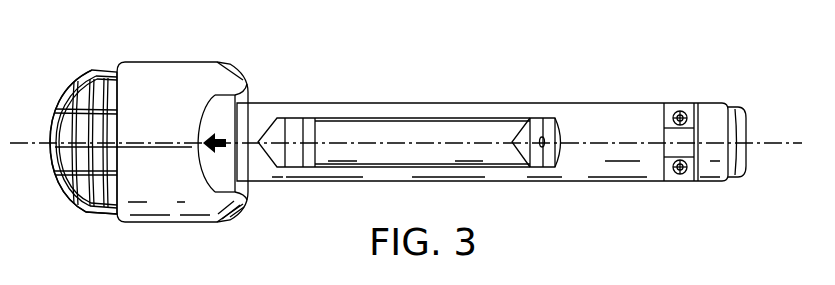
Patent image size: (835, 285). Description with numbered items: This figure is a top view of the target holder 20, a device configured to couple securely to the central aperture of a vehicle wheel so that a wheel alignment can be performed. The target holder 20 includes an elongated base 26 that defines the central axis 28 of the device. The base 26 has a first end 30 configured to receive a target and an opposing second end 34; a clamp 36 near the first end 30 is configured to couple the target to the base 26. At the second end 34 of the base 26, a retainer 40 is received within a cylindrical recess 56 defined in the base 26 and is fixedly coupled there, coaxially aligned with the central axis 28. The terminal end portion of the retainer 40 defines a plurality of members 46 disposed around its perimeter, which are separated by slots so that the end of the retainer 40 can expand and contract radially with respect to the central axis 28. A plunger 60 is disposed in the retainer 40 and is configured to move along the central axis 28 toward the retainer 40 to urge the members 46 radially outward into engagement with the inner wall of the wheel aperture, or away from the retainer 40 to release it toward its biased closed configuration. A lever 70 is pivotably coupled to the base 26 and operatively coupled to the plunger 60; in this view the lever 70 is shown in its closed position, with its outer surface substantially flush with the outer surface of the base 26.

The target holder 20 is at (496, 132).
The base 26 is at (318, 102).
The central axis 28 is at (784, 141).
The first end 30 is at (710, 85).
The second end 34 is at (193, 43).
The clamp 36 is at (672, 184).
The retainer 40 is at (103, 149).
The members 46 is at (72, 94).
The cylindrical recess 56 is at (114, 220).
The plunger 60 is at (50, 160).
The lever 70 is at (500, 160).